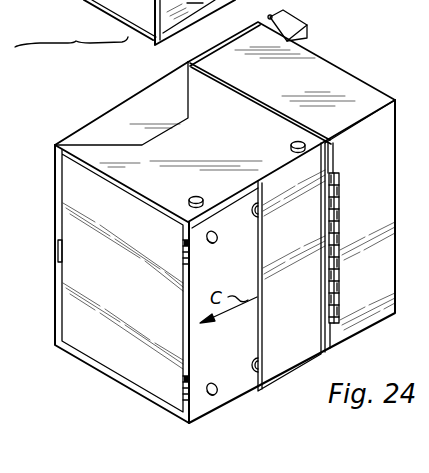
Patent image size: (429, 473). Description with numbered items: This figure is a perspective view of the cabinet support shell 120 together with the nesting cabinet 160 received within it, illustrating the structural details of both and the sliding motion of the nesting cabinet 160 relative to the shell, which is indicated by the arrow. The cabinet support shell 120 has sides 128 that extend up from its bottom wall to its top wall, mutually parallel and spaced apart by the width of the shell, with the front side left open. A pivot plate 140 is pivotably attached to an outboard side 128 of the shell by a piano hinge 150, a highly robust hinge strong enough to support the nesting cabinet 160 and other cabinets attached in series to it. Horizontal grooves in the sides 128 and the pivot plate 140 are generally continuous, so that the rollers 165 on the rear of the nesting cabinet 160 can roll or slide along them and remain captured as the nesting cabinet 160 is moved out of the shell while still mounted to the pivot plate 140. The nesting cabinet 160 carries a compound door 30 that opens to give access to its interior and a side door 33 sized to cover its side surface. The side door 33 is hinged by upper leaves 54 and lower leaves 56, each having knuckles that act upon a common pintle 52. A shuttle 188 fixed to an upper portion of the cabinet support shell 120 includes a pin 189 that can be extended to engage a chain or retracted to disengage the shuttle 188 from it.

The compound door 30 is at (127, 110).
The side door 33 is at (125, 291).
The pintle 52 is at (22, 4).
The upper leaf 54 is at (182, 255).
The lower leaf 56 is at (182, 390).
The cabinet support shell 120 is at (367, 81).
The side 128 is at (389, 179).
The pivot plate 140 is at (313, 228).
The piano hinge 150 is at (340, 262).
The nesting cabinet 160 is at (238, 145).
The roller 165 is at (200, 199).
The shuttle 188 is at (309, 37).
The pin 189 is at (285, 8).